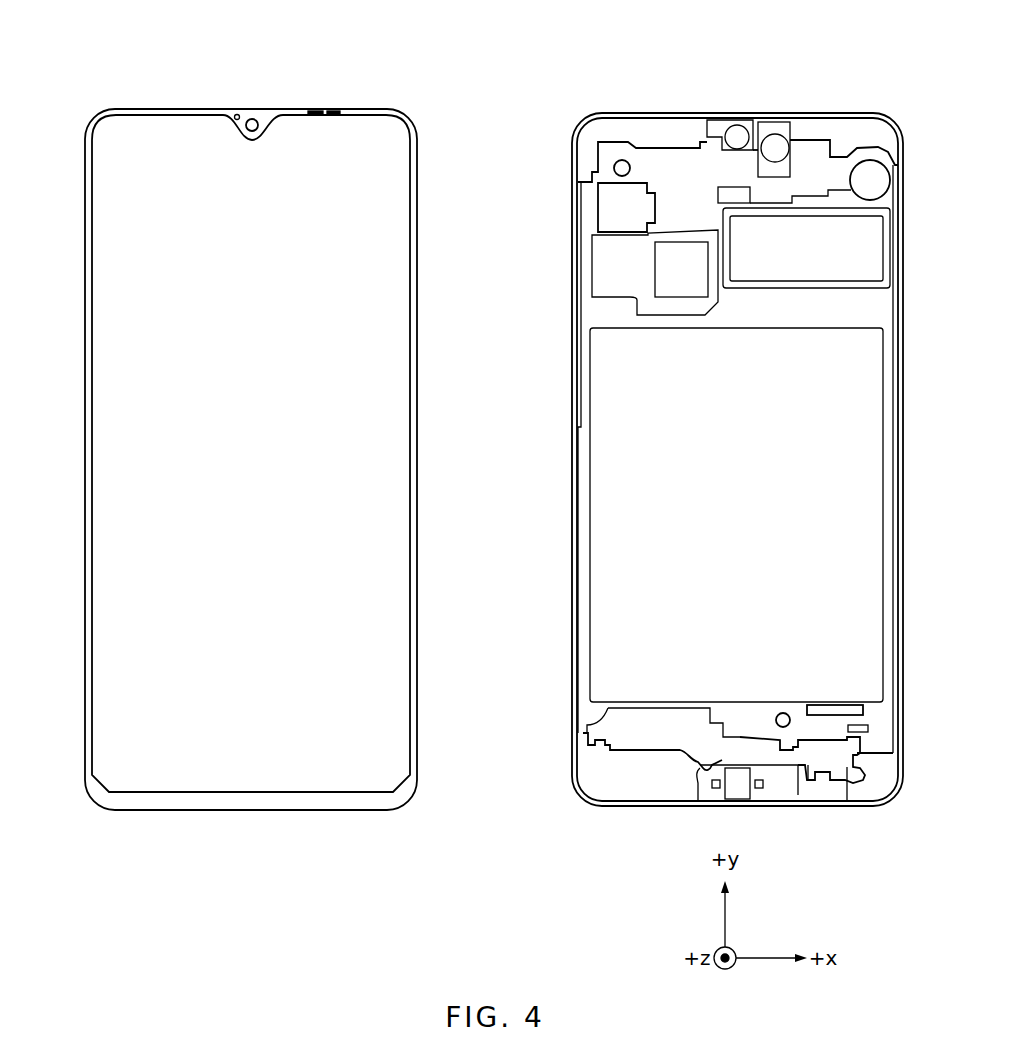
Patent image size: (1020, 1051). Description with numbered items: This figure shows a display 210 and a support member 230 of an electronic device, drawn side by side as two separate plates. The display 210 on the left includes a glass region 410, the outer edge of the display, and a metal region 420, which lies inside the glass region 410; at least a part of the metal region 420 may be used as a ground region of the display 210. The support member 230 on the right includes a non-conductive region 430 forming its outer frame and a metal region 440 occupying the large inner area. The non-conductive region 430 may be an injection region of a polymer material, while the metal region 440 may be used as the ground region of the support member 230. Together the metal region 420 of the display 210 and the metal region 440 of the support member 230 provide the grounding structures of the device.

The display 210 is at (263, 74).
The support member 230 is at (740, 83).
The glass region 410 is at (115, 108).
The metal region 420 is at (105, 321).
The non-conductive region 430 is at (572, 137).
The metal region 440 is at (597, 397).